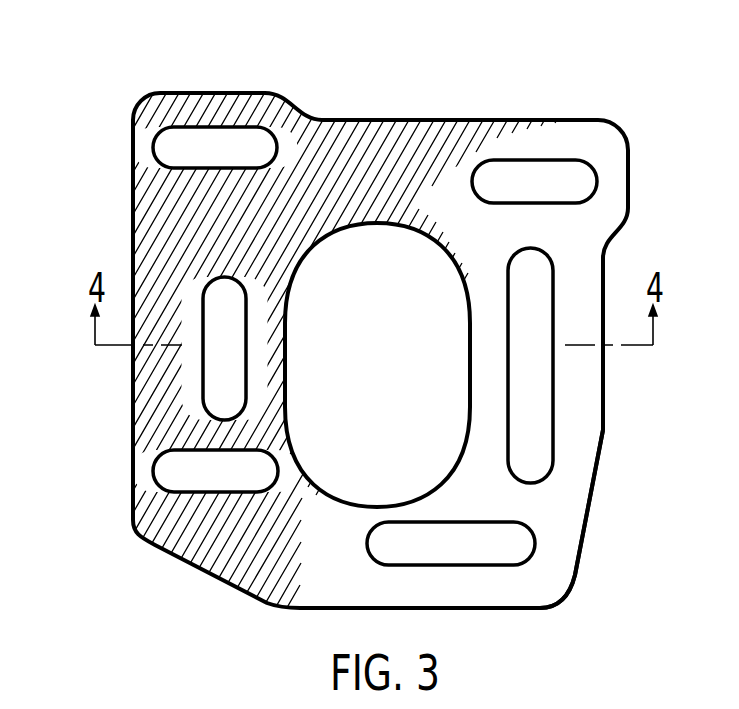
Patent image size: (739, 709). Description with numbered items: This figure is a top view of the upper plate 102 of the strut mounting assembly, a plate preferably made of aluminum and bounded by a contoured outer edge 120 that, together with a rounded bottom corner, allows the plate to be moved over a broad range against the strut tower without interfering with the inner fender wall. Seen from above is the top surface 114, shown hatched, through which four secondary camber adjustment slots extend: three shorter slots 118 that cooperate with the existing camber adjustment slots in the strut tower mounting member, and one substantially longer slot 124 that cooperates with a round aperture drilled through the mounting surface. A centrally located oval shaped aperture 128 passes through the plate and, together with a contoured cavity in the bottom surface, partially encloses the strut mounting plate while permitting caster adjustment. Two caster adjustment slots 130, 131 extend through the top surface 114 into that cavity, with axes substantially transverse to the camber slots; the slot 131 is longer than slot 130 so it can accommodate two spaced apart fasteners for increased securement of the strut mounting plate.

The upper plate 102 is at (106, 89).
The top surface 114 is at (430, 147).
The secondary camber adjustment slots 118 is at (553, 160).
The contoured outer edge 120 is at (590, 515).
The secondary camber adjustment slot 124 is at (450, 565).
The oval shaped aperture 128 is at (322, 490).
The caster adjustment slot 130 is at (203, 378).
The caster adjustment slot 131 is at (548, 395).